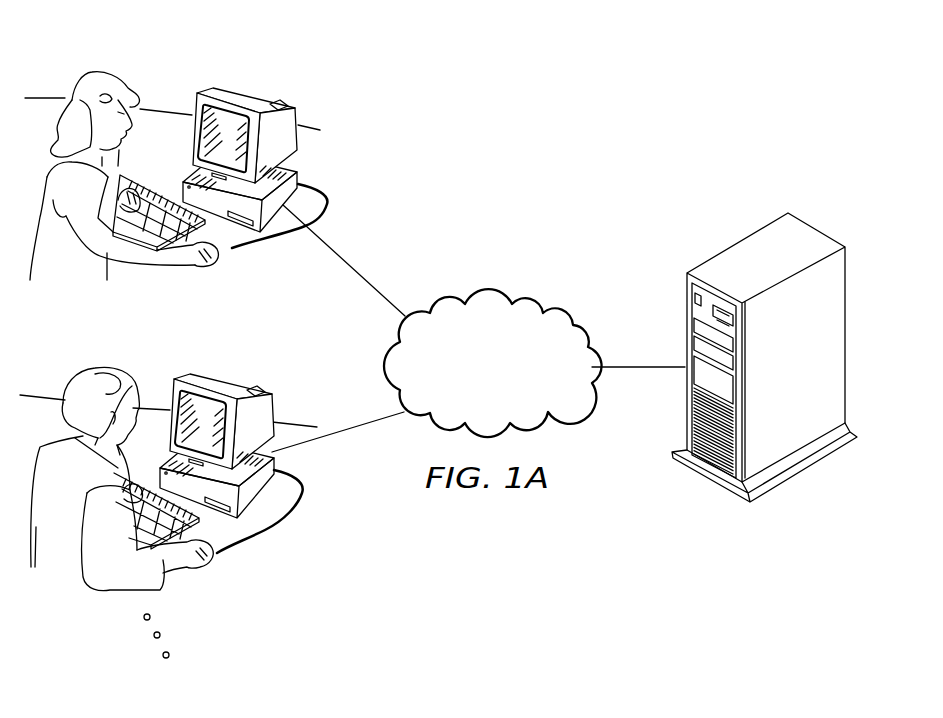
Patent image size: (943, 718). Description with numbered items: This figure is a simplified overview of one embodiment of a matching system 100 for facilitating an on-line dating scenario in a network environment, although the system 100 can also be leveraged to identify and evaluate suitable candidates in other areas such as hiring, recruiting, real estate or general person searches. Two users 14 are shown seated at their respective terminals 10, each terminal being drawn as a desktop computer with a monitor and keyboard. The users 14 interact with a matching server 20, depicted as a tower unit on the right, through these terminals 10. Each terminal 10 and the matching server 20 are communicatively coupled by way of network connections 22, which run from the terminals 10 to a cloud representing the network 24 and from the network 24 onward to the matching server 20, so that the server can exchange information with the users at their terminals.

The terminal 10 is at (275, 98).
The user 14 is at (97, 70).
The matching server 20 is at (738, 243).
The network connection 22 is at (359, 273).
The network 24 is at (489, 291).
The system 100 is at (569, 160).